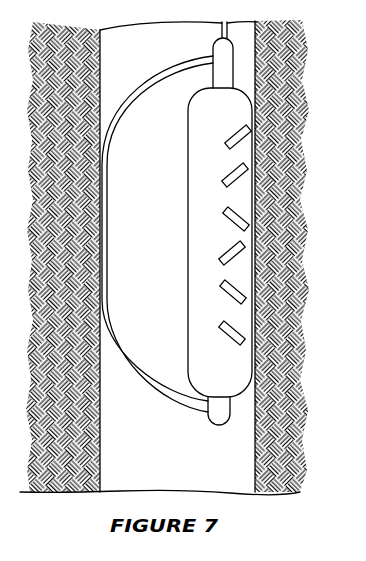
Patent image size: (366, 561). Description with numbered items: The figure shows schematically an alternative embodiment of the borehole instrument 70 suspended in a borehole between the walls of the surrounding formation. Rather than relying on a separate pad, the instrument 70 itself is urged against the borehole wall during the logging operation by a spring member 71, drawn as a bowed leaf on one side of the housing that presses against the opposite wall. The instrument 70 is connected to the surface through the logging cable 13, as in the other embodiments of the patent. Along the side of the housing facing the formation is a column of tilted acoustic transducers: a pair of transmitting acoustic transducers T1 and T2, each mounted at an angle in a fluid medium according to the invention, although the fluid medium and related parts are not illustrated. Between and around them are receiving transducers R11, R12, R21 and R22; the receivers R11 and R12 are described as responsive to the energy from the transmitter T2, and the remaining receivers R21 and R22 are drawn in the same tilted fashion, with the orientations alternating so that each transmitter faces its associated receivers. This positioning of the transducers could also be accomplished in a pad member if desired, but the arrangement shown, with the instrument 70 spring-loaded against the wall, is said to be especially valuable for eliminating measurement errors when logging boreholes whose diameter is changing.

The logging cable 13 is at (227, 31).
The borehole instrument 70 is at (245, 90).
The spring member 71 is at (142, 86).
The transmitting acoustic transducer T1 is at (240, 331).
The transmitting acoustic transducer T2 is at (244, 143).
The receiving transducer R11 is at (240, 259).
The receiving transducer R12 is at (243, 180).
The receiver R21 is at (243, 212).
The receiver R22 is at (236, 286).